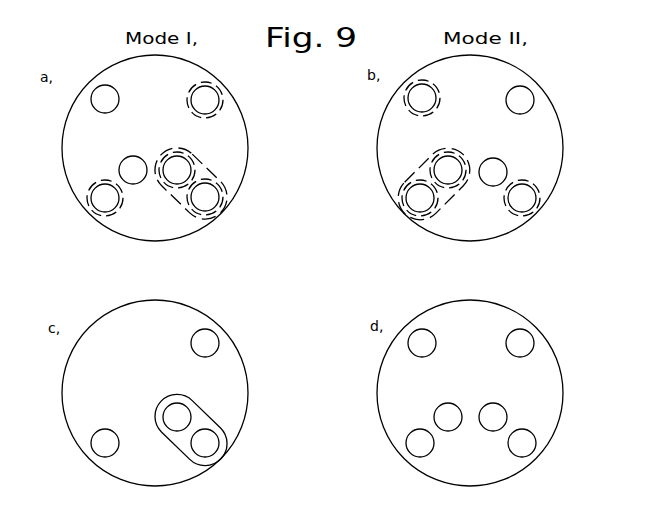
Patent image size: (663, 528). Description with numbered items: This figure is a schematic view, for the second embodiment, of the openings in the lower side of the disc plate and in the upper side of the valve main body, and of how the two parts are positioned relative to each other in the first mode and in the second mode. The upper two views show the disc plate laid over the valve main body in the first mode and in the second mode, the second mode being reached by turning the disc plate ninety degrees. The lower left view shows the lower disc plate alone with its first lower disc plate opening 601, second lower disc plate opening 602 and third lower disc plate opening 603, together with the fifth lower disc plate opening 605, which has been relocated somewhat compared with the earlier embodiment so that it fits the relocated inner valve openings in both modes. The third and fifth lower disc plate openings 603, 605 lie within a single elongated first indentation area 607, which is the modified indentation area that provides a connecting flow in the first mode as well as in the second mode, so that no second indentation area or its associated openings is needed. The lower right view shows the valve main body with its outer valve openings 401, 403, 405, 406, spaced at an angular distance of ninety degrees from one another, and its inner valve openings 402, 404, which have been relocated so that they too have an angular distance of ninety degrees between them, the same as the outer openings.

The first valve opening 401 is at (508, 333).
The second valve opening 402 is at (503, 406).
The third valve opening 403 is at (430, 356).
The fourth valve opening 404 is at (438, 406).
The fifth valve opening 405 is at (534, 431).
The sixth valve opening 406 is at (432, 458).
The first lower disc plate opening 601 is at (189, 335).
The second lower disc plate opening 602 is at (97, 430).
The third lower disc plate opening 603 is at (222, 453).
The fifth lower disc plate opening 605 is at (176, 397).
The first indentation area 607 is at (200, 402).